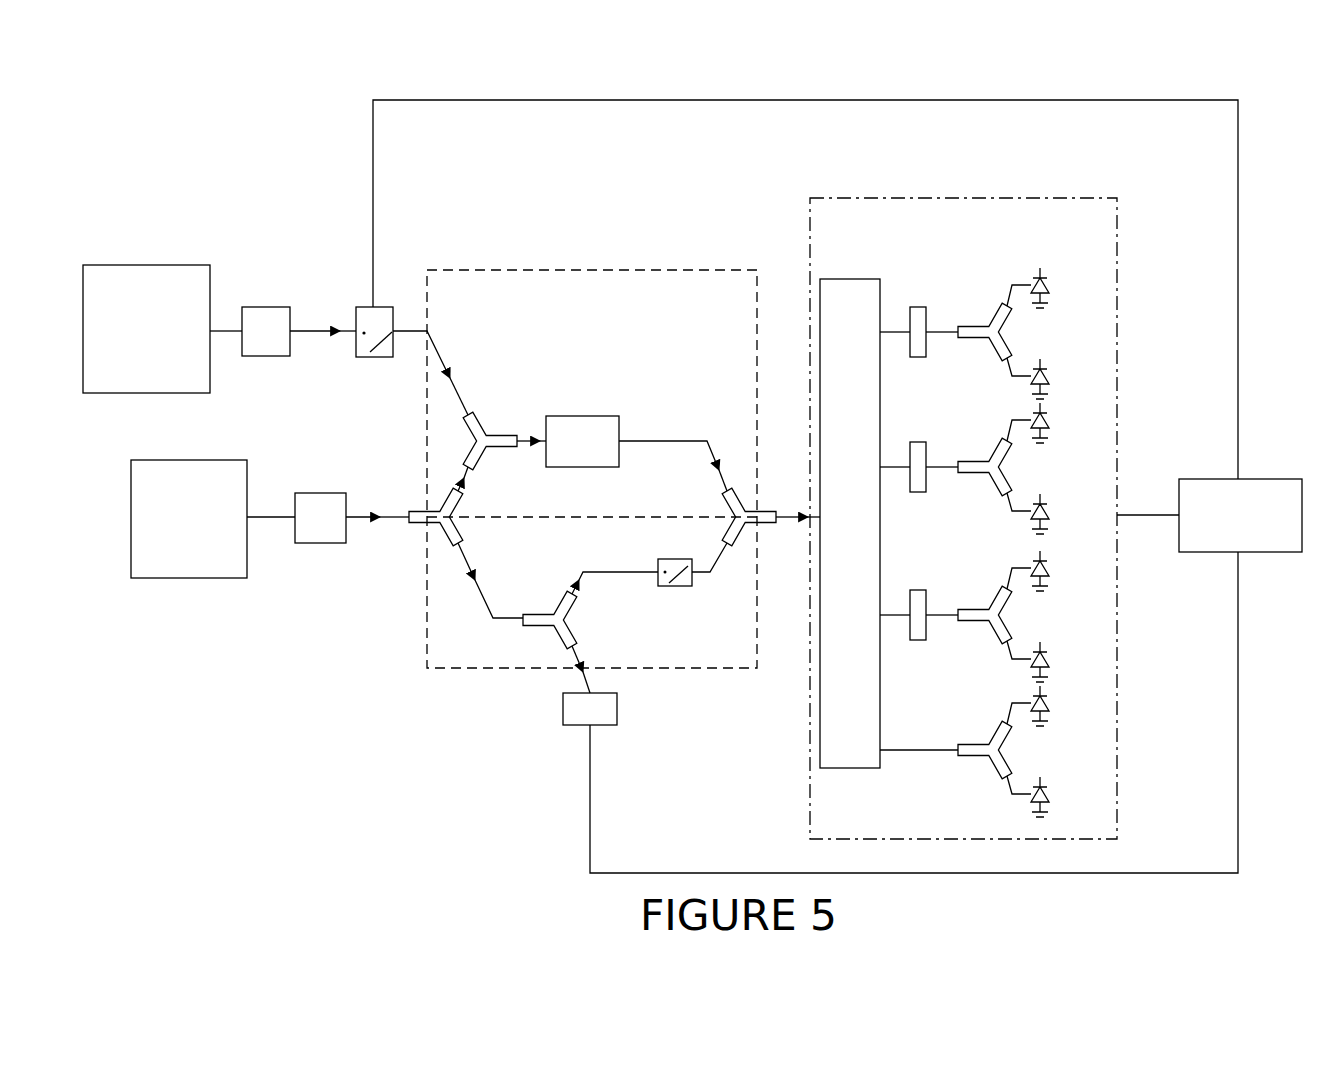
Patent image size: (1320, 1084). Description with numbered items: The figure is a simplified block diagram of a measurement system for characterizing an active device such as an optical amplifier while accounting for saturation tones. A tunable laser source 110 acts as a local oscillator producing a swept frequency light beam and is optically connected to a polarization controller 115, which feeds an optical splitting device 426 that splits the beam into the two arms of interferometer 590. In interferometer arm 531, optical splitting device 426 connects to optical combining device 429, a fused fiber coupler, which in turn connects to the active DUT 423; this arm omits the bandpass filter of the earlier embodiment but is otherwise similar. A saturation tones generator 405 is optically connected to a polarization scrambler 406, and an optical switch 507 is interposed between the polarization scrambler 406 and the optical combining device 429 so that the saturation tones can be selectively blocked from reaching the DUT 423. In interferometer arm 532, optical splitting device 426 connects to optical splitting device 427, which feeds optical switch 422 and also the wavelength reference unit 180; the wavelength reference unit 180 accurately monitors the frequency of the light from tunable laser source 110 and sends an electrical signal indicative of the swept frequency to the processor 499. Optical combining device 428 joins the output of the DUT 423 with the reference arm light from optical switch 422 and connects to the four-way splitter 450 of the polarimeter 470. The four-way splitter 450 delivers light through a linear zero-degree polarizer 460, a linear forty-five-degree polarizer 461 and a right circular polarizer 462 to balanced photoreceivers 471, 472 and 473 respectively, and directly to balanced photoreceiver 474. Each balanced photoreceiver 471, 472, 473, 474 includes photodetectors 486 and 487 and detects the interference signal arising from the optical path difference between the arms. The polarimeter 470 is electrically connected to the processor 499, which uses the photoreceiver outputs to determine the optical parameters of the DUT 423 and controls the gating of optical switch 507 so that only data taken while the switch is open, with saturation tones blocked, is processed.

The tunable laser source 110 is at (172, 578).
The polarization controller 115 is at (318, 494).
The wavelength reference unit 180 is at (563, 717).
The saturation tones generator 405 is at (134, 266).
The polarization scrambler 406 is at (258, 308).
The optical switch 507 is at (387, 308).
The interferometer 590 is at (620, 253).
The interferometer arm 531 is at (745, 296).
The interferometer arm 532 is at (745, 661).
The optical combining device 429 is at (480, 428).
The active DUT 423 is at (570, 420).
The optical splitting device 426 is at (455, 503).
The optical splitting device 427 is at (547, 612).
The optical combining device 428 is at (723, 512).
The optical switch 422 is at (659, 561).
The polarimeter 470 is at (1000, 200).
The four-way splitter 450 is at (853, 290).
The linear 0° polarizer 460 is at (925, 318).
The linear 45° polarizer 461 is at (925, 453).
The right circular polarizer 462 is at (925, 601).
The balanced photoreceiver 471 is at (1092, 312).
The balanced photoreceiver 472 is at (1092, 460).
The balanced photoreceiver 473 is at (1092, 607).
The balanced photoreceiver 474 is at (1092, 745).
The photodetector 486 is at (1049, 287).
The photodetector 487 is at (1049, 375).
The processor 499 is at (1266, 482).